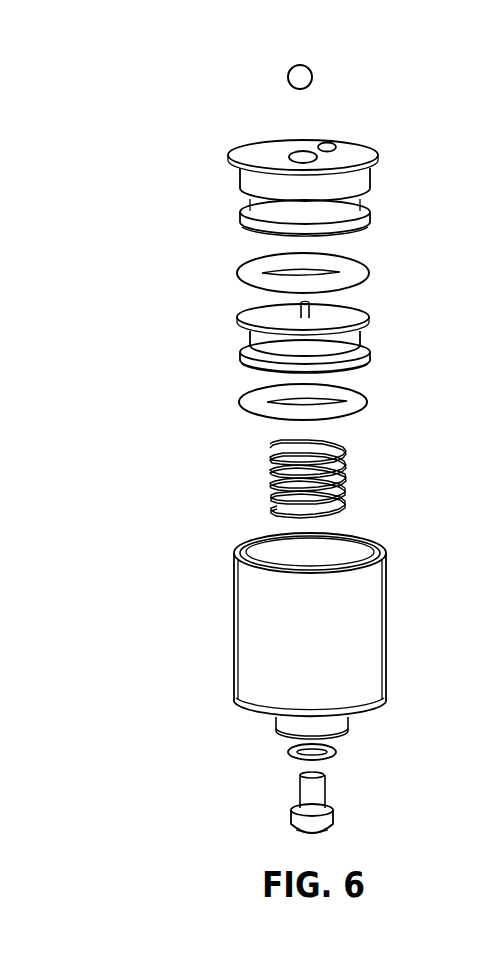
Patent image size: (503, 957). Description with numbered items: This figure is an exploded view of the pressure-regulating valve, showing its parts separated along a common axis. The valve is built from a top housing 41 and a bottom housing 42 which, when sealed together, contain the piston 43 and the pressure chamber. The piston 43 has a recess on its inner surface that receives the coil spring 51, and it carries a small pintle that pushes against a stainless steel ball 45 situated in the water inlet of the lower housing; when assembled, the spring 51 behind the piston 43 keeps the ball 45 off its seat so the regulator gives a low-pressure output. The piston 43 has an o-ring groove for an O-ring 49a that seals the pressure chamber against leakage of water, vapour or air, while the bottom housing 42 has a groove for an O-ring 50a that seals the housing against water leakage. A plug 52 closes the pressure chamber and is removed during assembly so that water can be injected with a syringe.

The top housing 41 is at (380, 650).
The bottom housing 42 is at (245, 187).
The piston 43 is at (247, 342).
The stainless steel ball 45 is at (311, 75).
The O-ring 49a is at (370, 397).
The O-ring 50a is at (360, 272).
The coil spring 51 is at (270, 472).
The plug 52 is at (335, 820).